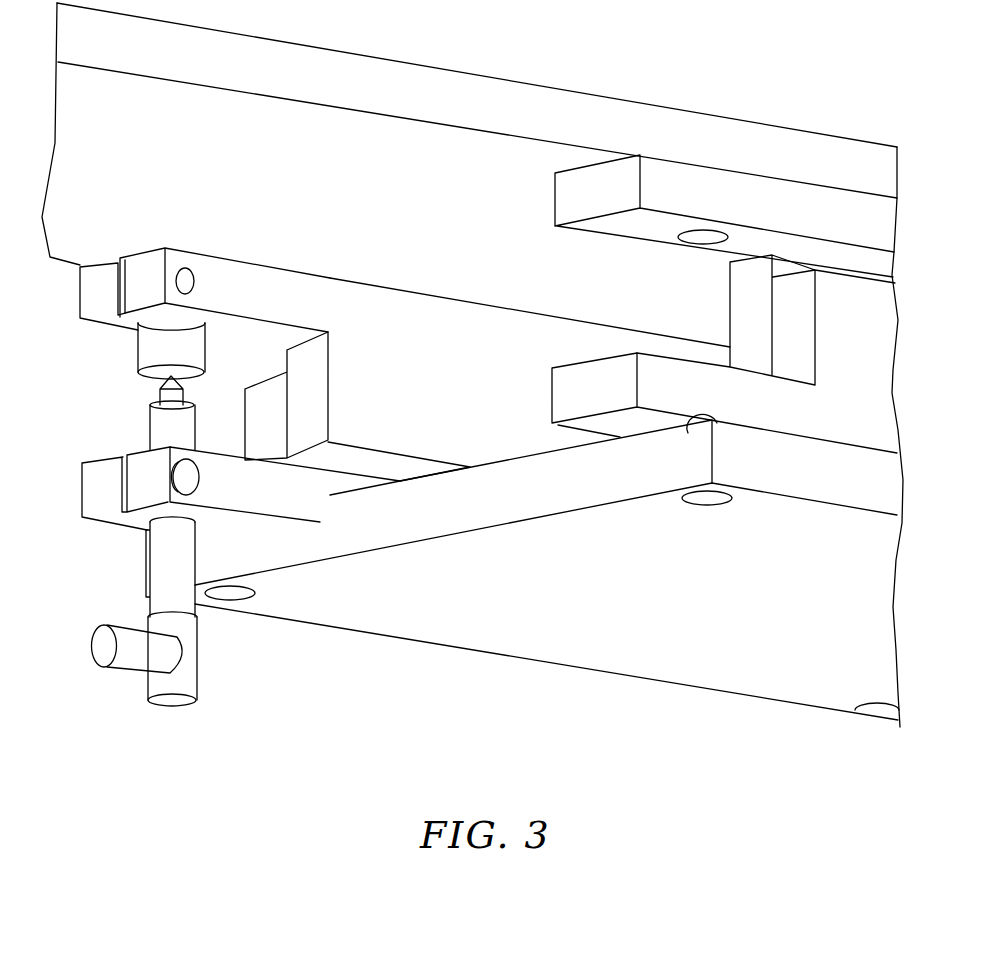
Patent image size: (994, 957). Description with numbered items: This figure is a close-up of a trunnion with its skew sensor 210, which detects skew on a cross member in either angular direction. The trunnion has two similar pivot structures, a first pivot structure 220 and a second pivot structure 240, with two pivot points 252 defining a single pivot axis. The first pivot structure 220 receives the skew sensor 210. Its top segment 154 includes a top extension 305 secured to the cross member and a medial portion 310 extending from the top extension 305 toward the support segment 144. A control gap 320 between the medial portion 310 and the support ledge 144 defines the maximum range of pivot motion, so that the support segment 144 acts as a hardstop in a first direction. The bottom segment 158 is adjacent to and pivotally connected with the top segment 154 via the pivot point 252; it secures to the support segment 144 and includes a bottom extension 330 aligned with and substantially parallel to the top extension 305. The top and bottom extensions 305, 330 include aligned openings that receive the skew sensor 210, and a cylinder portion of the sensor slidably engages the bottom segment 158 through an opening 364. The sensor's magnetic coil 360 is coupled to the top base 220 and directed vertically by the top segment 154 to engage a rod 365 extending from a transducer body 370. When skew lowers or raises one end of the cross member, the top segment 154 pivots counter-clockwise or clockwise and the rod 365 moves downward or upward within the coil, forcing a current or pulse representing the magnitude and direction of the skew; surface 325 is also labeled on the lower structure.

The support segment 144 is at (520, 626).
The top segment 154 is at (786, 200).
The bottom segment 158 is at (266, 392).
The skew sensor 210 is at (140, 702).
The first pivot structure 220 is at (78, 338).
The second pivot structure 240 is at (634, 98).
The pivot point 252 is at (558, 441).
The top extension 305 is at (246, 275).
The medial portion 310 is at (406, 302).
The control gap 320 is at (338, 480).
The top surface of lower bar 325 is at (346, 434).
The bottom extension 330 is at (262, 498).
The magnetic coil 360 is at (140, 373).
The opening 364 is at (147, 529).
The rod 365 is at (168, 394).
The transducer body 370 is at (160, 432).